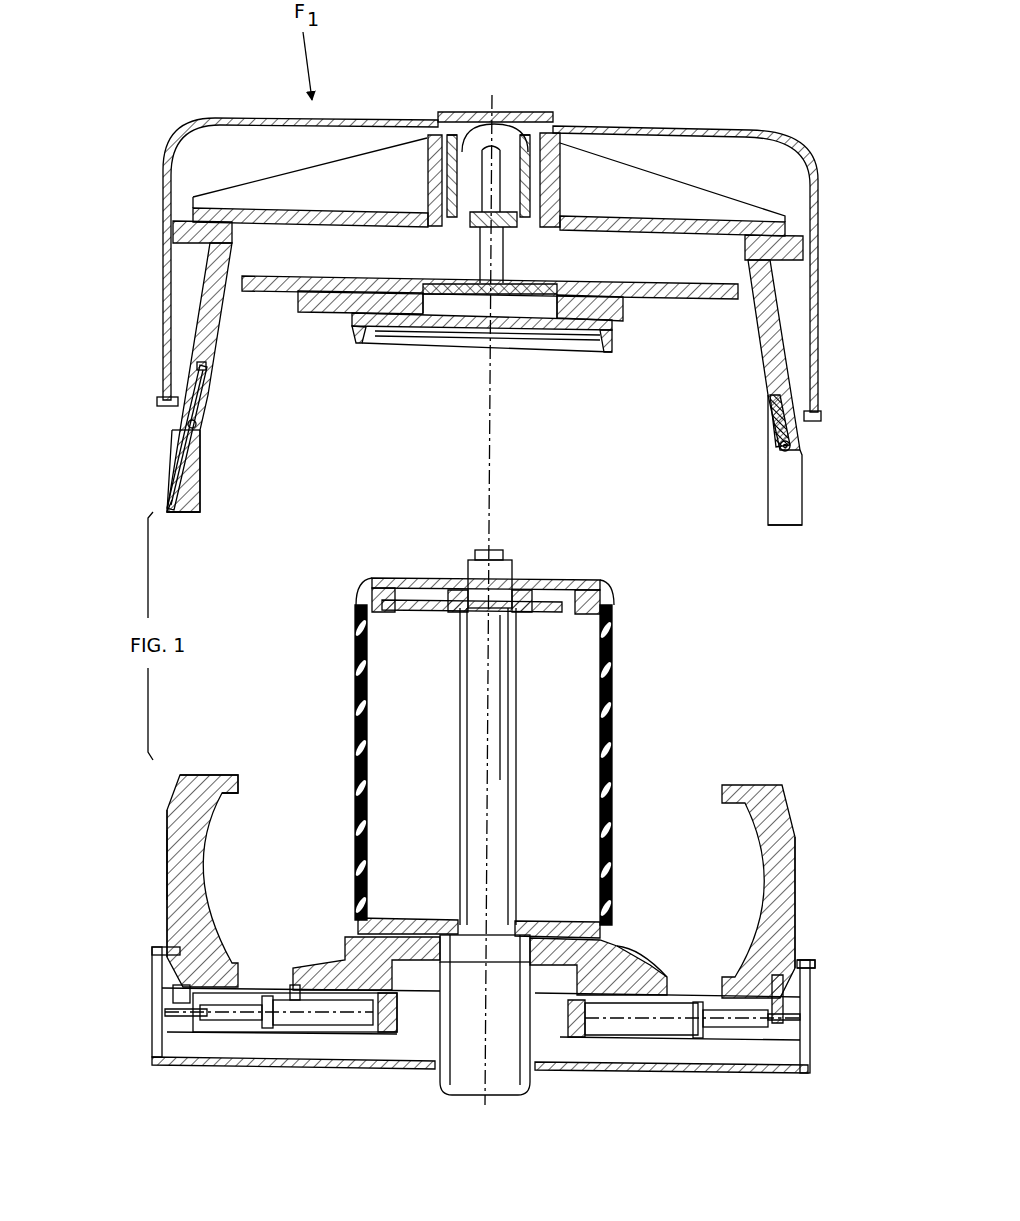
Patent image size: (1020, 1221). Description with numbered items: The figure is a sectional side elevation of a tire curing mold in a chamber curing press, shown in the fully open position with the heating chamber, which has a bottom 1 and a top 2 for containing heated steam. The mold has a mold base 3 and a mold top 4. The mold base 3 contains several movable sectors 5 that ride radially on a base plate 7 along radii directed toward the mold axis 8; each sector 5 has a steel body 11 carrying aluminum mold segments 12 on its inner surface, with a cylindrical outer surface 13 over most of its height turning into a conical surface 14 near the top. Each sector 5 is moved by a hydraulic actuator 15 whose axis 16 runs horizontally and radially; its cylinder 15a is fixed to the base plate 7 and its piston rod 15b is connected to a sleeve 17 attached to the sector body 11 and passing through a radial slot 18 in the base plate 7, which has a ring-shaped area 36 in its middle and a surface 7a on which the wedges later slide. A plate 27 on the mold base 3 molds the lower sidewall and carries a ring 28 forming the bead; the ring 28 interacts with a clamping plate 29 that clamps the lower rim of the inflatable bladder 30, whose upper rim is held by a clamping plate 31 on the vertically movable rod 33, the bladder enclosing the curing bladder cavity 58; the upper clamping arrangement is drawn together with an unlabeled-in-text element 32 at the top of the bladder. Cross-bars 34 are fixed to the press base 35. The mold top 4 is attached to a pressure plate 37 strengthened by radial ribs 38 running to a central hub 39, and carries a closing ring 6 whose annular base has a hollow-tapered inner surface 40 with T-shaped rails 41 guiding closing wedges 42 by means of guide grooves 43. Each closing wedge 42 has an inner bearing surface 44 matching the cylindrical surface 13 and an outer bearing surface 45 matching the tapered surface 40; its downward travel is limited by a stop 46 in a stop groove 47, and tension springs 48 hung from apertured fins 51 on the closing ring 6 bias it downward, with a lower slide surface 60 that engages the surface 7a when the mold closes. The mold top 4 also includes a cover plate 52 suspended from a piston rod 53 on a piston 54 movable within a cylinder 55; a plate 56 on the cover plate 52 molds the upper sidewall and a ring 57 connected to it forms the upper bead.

The bottom 1 is at (810, 1017).
The top 2 is at (818, 307).
The mold base 3 is at (800, 897).
The mold top 4 is at (549, 95).
The sectors 5 is at (245, 781).
The closing ring 6 is at (765, 335).
The base plate 7 is at (255, 990).
The surface of the base plate 7a is at (797, 960).
The mold axis 8 is at (487, 697).
The body 11 is at (175, 840).
The mold segments 12 is at (210, 797).
The cylindrical outer surface 13 is at (167, 875).
The conical surface 14 is at (183, 793).
The hydraulic actuator 15 is at (300, 1015).
The cylinder 15a is at (327, 1015).
The piston rod 15b is at (237, 1015).
The axis of the actuator 16 is at (340, 1012).
The sleeve 17 is at (172, 995).
The radial slot 18 is at (218, 1000).
The plate 27 is at (660, 975).
The ring 28 is at (597, 947).
The clamping plate 29 is at (547, 917).
The inflatable bladder 30 is at (612, 776).
The clamping plate 31 is at (575, 613).
The cover 32 is at (588, 583).
The movable rod 33 is at (502, 673).
The cross-bars 34 is at (652, 1053).
The press base 35 is at (565, 1075).
The ring-shaped area 36 is at (393, 1028).
The pressure plate 37 is at (660, 222).
The strengthening ribs 38 is at (603, 188).
The hub 39 is at (430, 172).
The hollow-tapered inner surface 40 is at (212, 323).
The rails 41 is at (205, 374).
The closing wedges 42 is at (210, 492).
The guide groove 43 is at (172, 457).
The bearing surface 44 is at (200, 460).
The bearing surface 45 is at (800, 467).
The stop 46 is at (194, 424).
The stop groove 47 is at (178, 442).
The tension springs 48 is at (770, 417).
The apertured fins 51 is at (777, 450).
The cover plate 52 is at (650, 288).
The piston rod 53 is at (505, 255).
The piston 54 is at (506, 180).
The cylinder 55 is at (489, 165).
The plate 56 is at (313, 312).
The ring 57 is at (365, 343).
The curing bladder cavity 58 is at (582, 733).
The lower slide surface 60 is at (182, 515).